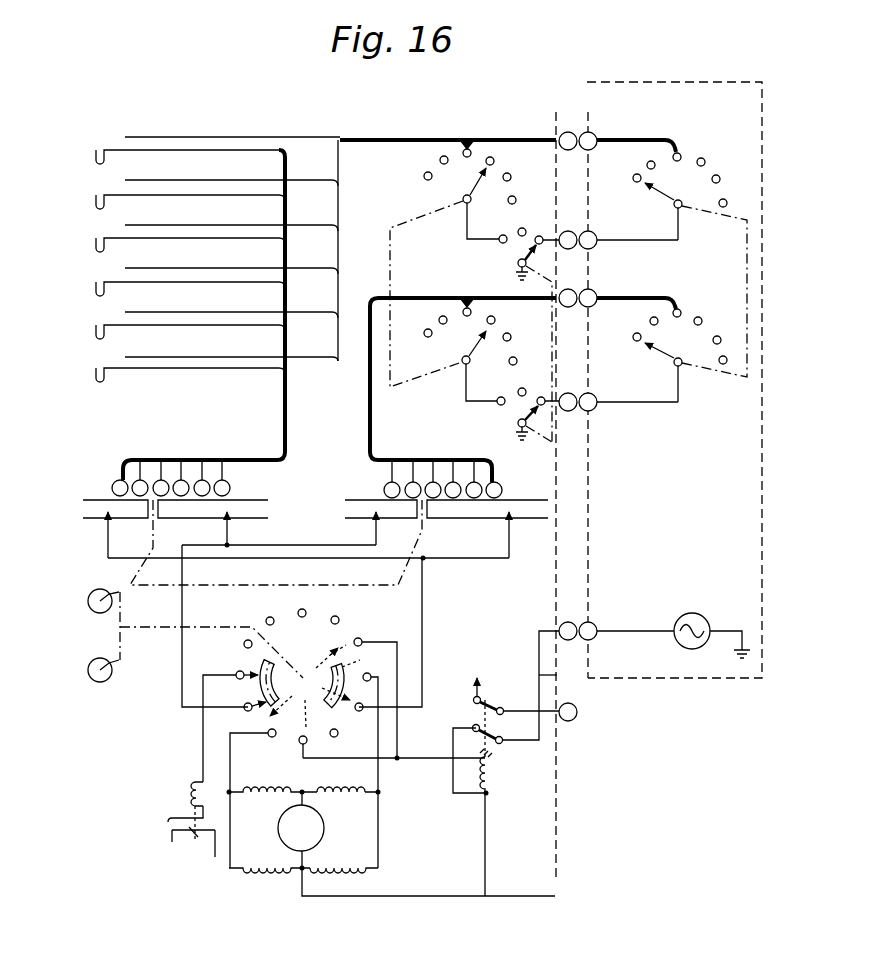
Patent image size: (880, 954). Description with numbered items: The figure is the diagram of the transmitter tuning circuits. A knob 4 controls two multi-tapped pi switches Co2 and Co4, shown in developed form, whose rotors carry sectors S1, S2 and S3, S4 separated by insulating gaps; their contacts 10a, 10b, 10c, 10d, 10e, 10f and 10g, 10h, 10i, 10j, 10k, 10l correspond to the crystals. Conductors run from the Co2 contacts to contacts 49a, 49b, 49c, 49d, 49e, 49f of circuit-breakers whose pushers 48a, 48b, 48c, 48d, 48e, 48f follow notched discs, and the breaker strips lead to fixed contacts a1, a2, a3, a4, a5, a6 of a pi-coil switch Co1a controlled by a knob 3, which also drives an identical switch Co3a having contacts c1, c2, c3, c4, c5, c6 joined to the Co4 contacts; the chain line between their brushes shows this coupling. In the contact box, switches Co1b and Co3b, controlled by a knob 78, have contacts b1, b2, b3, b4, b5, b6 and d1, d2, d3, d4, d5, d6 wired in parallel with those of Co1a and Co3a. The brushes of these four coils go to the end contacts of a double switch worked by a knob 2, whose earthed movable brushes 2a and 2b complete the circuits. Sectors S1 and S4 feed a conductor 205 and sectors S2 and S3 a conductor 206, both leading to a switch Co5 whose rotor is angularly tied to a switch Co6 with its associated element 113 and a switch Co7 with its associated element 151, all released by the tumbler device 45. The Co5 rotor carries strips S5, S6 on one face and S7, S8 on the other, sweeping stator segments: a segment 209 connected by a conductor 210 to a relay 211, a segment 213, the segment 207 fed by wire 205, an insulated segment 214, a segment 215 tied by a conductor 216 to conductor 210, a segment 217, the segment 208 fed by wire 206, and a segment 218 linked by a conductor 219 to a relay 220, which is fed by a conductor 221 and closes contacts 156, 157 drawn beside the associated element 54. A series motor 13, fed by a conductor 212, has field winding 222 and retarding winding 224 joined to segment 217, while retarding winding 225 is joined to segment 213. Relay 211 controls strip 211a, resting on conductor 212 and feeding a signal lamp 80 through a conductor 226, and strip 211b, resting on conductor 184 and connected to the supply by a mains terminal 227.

The pusher 48a is at (100, 149).
The pusher 48b is at (100, 194).
The pusher 48c is at (100, 237).
The pusher 48d is at (100, 281).
The pusher 48e is at (100, 324).
The pusher 48f is at (100, 367).
The circuit-breaker contact 49a is at (124, 147).
The circuit-breaker contact 49b is at (124, 192).
The circuit-breaker contact 49c is at (124, 235).
The circuit-breaker contact 49d is at (124, 279).
The circuit-breaker contact 49e is at (124, 322).
The circuit-breaker contact 49f is at (124, 365).
The multi-tapped pi switch Co2 is at (169, 391).
The fixed contact a1 is at (420, 169).
The fixed contact a2 is at (439, 153).
The fixed contact a3 is at (476, 149).
The fixed contact a4 is at (501, 156).
The fixed contact a5 is at (517, 172).
The fixed contact a6 is at (523, 196).
The pi-coil switch Co1a is at (467, 203).
The knob 3 is at (390, 263).
The movable brush 2a is at (518, 264).
The knob 2 is at (553, 350).
The fixed contact b1 is at (628, 172).
The fixed contact b2 is at (646, 157).
The fixed contact b3 is at (685, 150).
The fixed contact b4 is at (709, 157).
The fixed contact b5 is at (726, 174).
The fixed contact b6 is at (733, 197).
The pi-coil switch Co1b is at (660, 211).
The knob 78 is at (750, 273).
The fixed contact c1 is at (420, 334).
The fixed contact c2 is at (437, 312).
The fixed contact c3 is at (475, 308).
The fixed contact c4 is at (501, 315).
The fixed contact c5 is at (517, 333).
The fixed contact c6 is at (523, 357).
The pi-coil switch Co3a is at (454, 366).
The multi-tapped pi switch Co4 is at (419, 393).
The movable brush 2b is at (518, 419).
The fixed contact d1 is at (628, 331).
The fixed contact d2 is at (648, 314).
The fixed contact d3 is at (685, 306).
The fixed contact d4 is at (707, 315).
The fixed contact d5 is at (727, 333).
The fixed contact d6 is at (733, 354).
The pi-coil switch Co3b is at (661, 372).
The switch contact 10a is at (115, 481).
The switch contact 10b is at (140, 479).
The switch contact 10c is at (162, 479).
The switch contact 10d is at (182, 479).
The switch contact 10e is at (203, 479).
The switch contact 10f is at (224, 479).
The switch contact 10g is at (393, 481).
The switch contact 10h is at (414, 481).
The switch contact 10i is at (435, 481).
The switch contact 10j is at (455, 481).
The switch contact 10k is at (478, 483).
The switch contact 10l is at (503, 490).
The rotor sector S1 is at (115, 529).
The rotor sector S2 is at (267, 522).
The rotor sector S3 is at (381, 522).
The rotor sector S4 is at (328, 529).
The knob 4 is at (297, 586).
The switch Co6 is at (102, 592).
The counter shaft 113 is at (100, 613).
The switch Co7 is at (102, 661).
The counter shaft 151 is at (100, 682).
The conductor 206 is at (182, 613).
The conductor 205 is at (422, 622).
The switch Co5 is at (302, 660).
The rotor strip S5 is at (270, 656).
The rotor strip S6 is at (350, 678).
The rotor strip S7 is at (302, 688).
The rotor strip S8 is at (347, 632).
The tumbler-type releasing device 45 is at (313, 647).
The contact segment 209 is at (362, 641).
The conductor 210 is at (398, 733).
The contact segment 213 is at (372, 677).
The contact segment 218 is at (237, 673).
The conductor 219 is at (204, 740).
The contact segment 208 is at (245, 709).
The contact segment 207 is at (359, 711).
The contact segment 217 is at (269, 737).
The contact segment 215 is at (300, 744).
The conductor 216 is at (345, 759).
The insulated segment 214 is at (331, 737).
The relay 220 is at (190, 796).
The conductor 221 is at (172, 818).
The contact 157 is at (195, 834).
The switch contact 54 is at (172, 843).
The contact 156 is at (215, 858).
The series motor 13 is at (325, 830).
The field winding 222 is at (264, 800).
The retarding winding 224 is at (270, 877).
The retarding winding 225 is at (340, 876).
The conductor 212 is at (520, 897).
The relay 211 is at (491, 778).
The contact strip 211a is at (495, 736).
The contact strip 211b is at (490, 702).
The conductor 184 is at (480, 676).
The conductor 226 is at (558, 676).
The mains terminal 227 is at (578, 712).
The signal lamp 80 is at (703, 621).